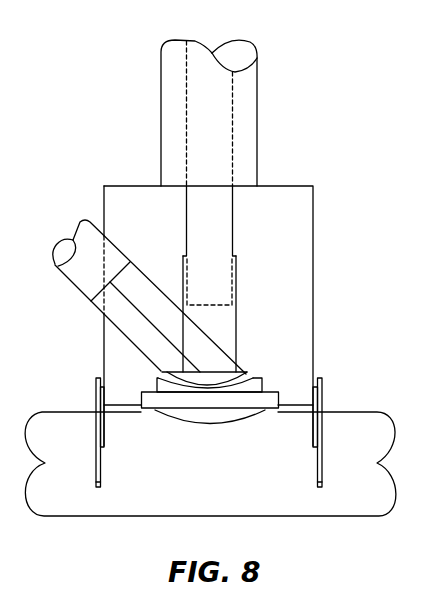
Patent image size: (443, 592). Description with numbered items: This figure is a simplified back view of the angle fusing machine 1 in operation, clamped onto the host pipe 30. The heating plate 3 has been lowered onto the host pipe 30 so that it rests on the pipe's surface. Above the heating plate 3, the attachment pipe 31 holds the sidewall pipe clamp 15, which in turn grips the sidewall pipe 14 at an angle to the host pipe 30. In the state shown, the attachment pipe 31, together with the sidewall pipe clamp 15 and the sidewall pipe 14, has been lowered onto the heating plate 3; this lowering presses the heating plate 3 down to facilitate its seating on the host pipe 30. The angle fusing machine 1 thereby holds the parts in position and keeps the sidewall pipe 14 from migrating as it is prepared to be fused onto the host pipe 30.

The angle fusing machine 1 is at (75, 143).
The heating plate 3 is at (266, 376).
The sidewall pipe 14 is at (82, 291).
The sidewall pipe clamp 15 is at (128, 340).
The host pipe 30 is at (356, 412).
The attachment pipe 31 is at (237, 300).